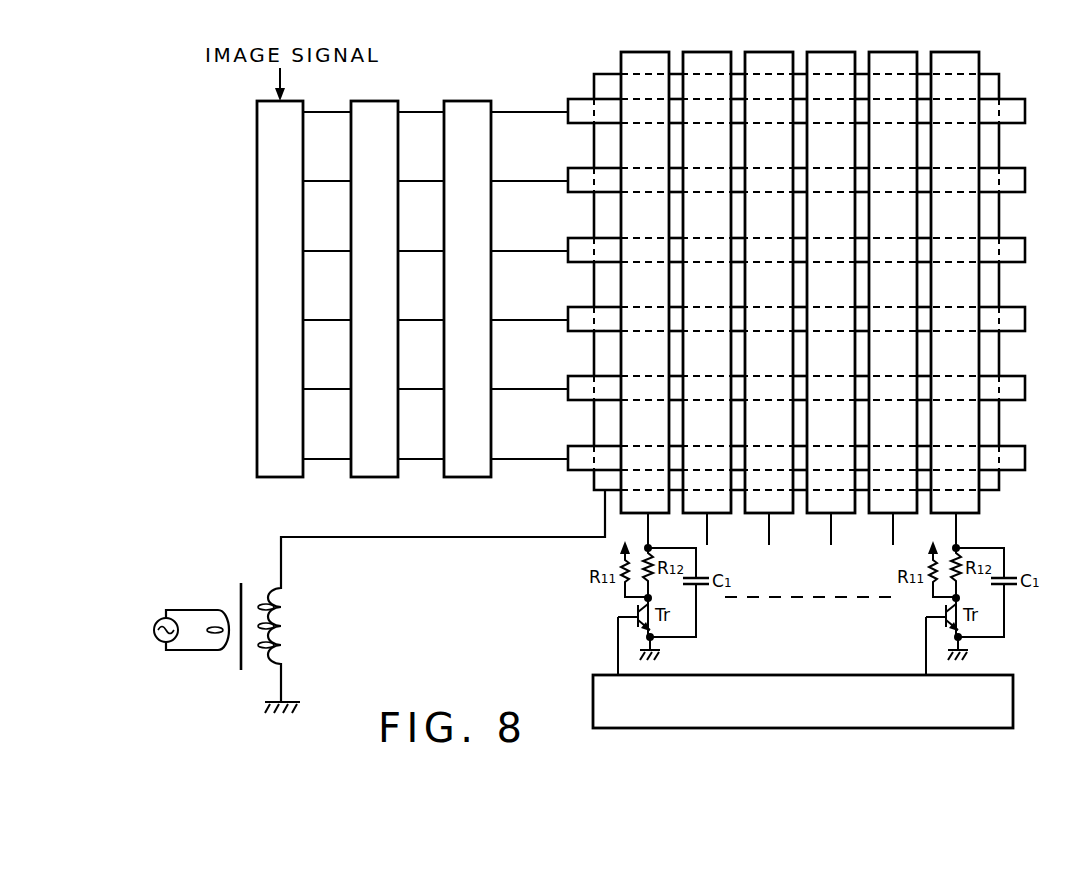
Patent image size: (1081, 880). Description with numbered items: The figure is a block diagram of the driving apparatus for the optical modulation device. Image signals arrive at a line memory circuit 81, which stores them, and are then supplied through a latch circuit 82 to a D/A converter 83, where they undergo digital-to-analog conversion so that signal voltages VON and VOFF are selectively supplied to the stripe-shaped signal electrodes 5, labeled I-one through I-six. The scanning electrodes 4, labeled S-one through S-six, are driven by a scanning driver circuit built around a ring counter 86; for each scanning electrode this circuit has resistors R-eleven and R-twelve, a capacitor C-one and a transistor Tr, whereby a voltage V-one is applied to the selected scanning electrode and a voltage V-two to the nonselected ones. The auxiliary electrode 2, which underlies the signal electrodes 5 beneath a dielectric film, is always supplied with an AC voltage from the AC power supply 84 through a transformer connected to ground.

The auxiliary electrode 2 is at (1001, 418).
The scanning electrodes 4 is at (1010, 538).
The signal electrodes 5 is at (544, 100).
The line memory circuit 81 is at (278, 478).
The latch circuit 82 is at (374, 478).
The D/A converter 83 is at (468, 478).
The AC power supply 84 is at (275, 629).
The ring counter 86 is at (1013, 698).